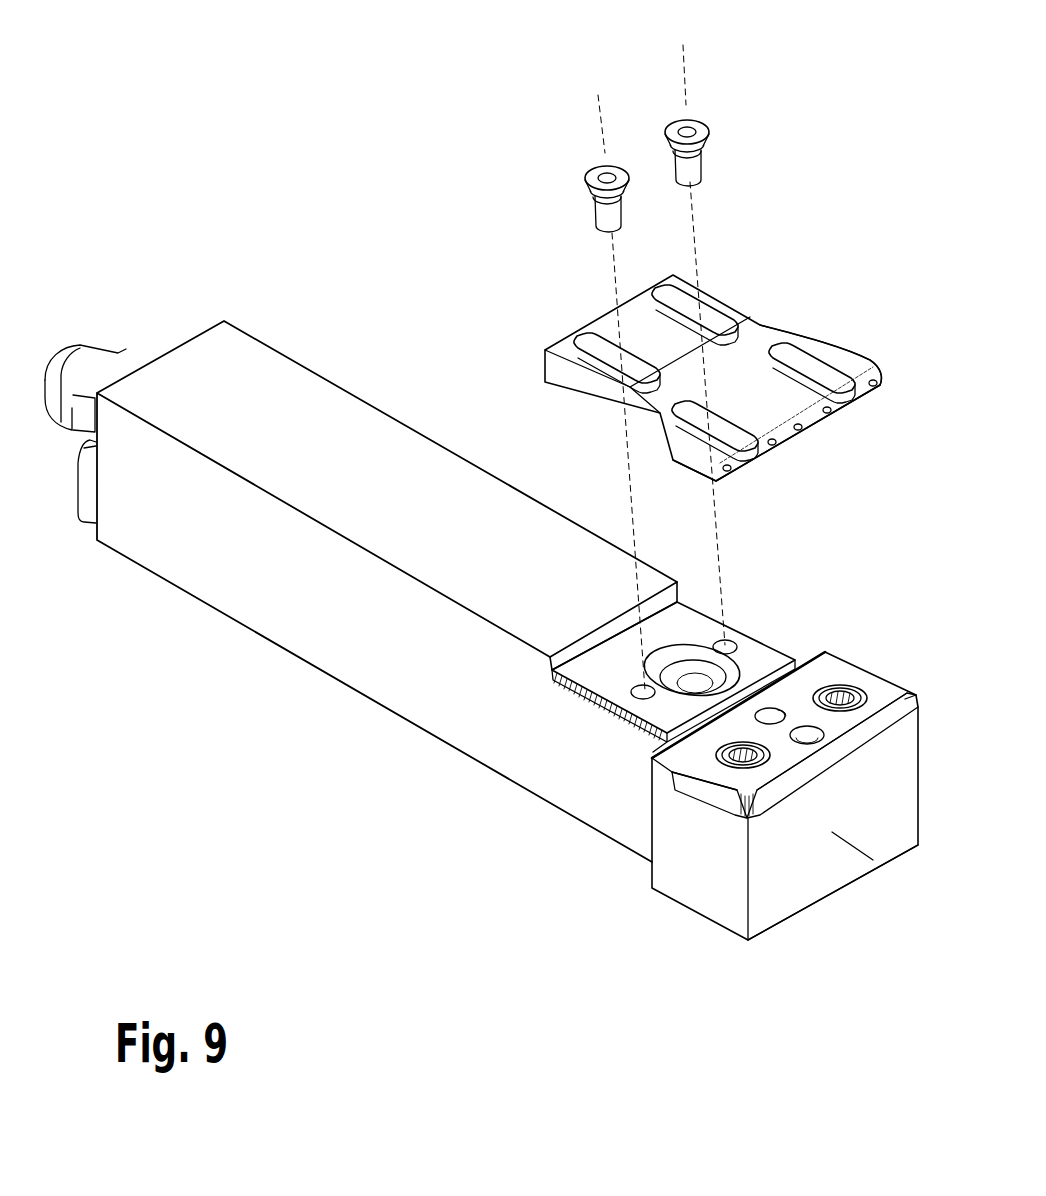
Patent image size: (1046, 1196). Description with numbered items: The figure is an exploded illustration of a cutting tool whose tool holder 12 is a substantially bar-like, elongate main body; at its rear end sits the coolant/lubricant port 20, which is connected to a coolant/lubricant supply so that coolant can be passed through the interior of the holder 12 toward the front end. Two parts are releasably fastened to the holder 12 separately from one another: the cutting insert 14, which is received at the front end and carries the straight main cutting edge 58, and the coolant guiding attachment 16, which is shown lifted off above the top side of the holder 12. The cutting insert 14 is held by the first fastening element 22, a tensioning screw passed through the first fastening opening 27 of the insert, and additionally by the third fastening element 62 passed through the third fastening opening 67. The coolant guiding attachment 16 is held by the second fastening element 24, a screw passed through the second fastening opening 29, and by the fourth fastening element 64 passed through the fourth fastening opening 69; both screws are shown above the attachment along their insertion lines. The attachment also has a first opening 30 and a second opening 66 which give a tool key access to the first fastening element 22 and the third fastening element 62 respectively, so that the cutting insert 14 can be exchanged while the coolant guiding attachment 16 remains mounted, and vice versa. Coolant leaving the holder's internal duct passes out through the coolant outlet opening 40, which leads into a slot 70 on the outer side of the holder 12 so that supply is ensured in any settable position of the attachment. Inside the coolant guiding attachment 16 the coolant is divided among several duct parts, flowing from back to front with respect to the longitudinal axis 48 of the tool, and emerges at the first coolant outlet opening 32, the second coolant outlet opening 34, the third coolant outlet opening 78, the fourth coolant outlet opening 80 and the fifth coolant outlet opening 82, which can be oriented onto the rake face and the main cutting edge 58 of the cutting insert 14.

The tool holder 12 is at (317, 652).
The cutting insert 14 is at (857, 750).
The coolant guiding attachment 16 is at (763, 343).
The coolant/lubricant port 20 is at (110, 372).
The first fastening element 22 is at (665, 757).
The second fastening element 24 is at (595, 215).
The first fastening opening 27 is at (777, 757).
The second fastening opening 29 is at (588, 337).
The first opening 30 is at (703, 410).
The first coolant outlet opening 32 is at (733, 472).
The second coolant outlet opening 34 is at (807, 430).
The coolant outlet opening 40 is at (700, 683).
The longitudinal axis 48 is at (903, 883).
The main cutting edge 58 is at (877, 728).
The third fastening element 62 is at (850, 688).
The fourth fastening element 64 is at (692, 168).
The second opening 66 is at (800, 353).
The third fastening opening 67 is at (860, 687).
The fourth fastening opening 69 is at (725, 300).
The slot 70 is at (678, 657).
The third coolant outlet opening 78 is at (880, 387).
The fourth coolant outlet opening 80 is at (778, 447).
The fifth coolant outlet opening 82 is at (840, 415).